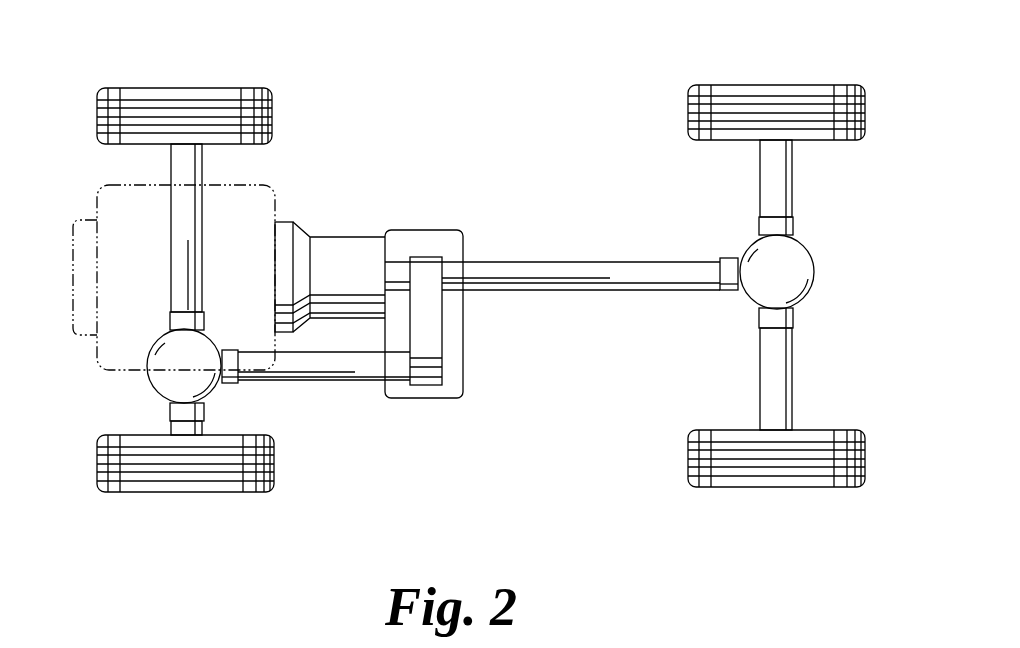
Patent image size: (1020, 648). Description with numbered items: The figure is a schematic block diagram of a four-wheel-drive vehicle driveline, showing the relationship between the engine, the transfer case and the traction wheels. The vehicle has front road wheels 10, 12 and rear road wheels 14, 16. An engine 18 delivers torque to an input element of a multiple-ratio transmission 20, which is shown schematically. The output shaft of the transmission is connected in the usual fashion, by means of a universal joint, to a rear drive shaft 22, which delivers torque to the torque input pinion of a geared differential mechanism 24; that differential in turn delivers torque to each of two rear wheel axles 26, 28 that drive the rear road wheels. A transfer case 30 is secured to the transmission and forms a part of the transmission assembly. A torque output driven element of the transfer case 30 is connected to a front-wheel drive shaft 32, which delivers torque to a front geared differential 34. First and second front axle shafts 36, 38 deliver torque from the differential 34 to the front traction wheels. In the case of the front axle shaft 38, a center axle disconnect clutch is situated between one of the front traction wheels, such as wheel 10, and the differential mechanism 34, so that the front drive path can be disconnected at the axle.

The front road wheel 10 is at (113, 88).
The front road wheel 12 is at (121, 492).
The rear road wheel 14 is at (845, 85).
The rear road wheel 16 is at (848, 487).
The engine 18 is at (263, 200).
The multiple-ratio transmission 20 is at (347, 237).
The rear drive shaft 22 is at (598, 262).
The geared differential mechanism 24 is at (814, 262).
The rear wheel axle 26 is at (792, 165).
The rear wheel axle 28 is at (792, 372).
The transfer case 30 is at (463, 237).
The front-wheel drive shaft 32 is at (338, 380).
The front geared differential 34 is at (147, 355).
The first front axle shaft 36 is at (171, 430).
The second front axle shaft 38 is at (171, 212).